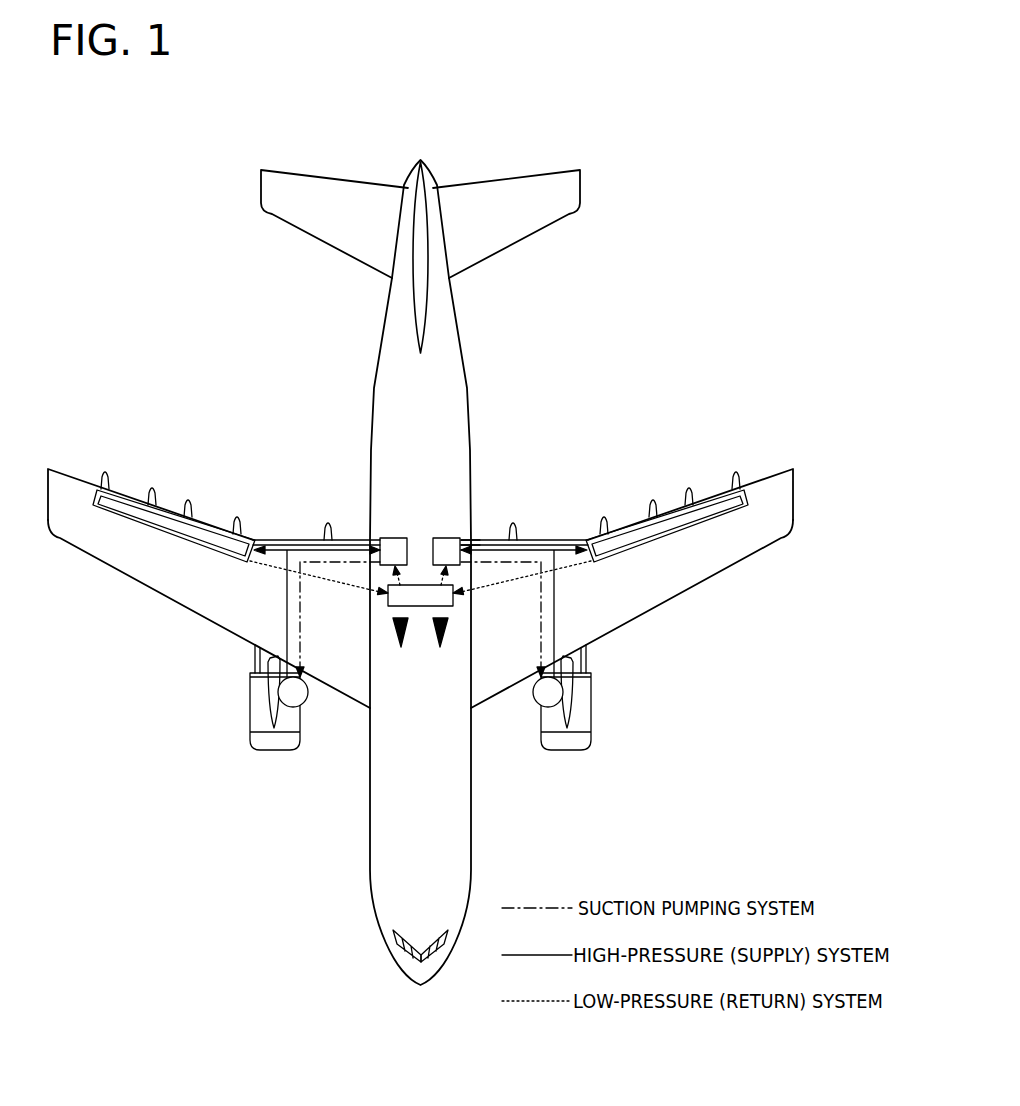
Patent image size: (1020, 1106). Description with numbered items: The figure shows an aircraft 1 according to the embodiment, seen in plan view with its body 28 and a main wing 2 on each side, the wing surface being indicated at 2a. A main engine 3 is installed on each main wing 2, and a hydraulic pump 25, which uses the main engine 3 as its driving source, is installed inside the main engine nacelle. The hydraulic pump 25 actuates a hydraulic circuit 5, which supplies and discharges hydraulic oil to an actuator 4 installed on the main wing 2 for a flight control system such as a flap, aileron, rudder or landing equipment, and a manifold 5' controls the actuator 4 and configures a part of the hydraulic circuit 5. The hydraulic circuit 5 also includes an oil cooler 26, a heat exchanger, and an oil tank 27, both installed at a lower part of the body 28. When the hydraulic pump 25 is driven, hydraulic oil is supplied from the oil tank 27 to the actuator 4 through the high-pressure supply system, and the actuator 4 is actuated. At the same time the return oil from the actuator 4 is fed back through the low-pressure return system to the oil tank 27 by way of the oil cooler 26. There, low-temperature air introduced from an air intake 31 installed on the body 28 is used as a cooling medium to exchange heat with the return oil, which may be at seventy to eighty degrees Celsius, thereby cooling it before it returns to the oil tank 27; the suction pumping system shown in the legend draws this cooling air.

The aircraft 1 is at (684, 157).
The main wing 2 is at (145, 550).
The wing surface 2a is at (187, 597).
The main engine 3 is at (268, 748).
The actuator 4 is at (173, 500).
The hydraulic circuit 5 is at (430, 496).
The manifold 5' is at (496, 496).
The hydraulic pump 25 is at (304, 701).
The oil cooler 26 is at (418, 607).
The oil tank 27 is at (440, 537).
The body 28 is at (460, 333).
The air intake 31 is at (396, 648).